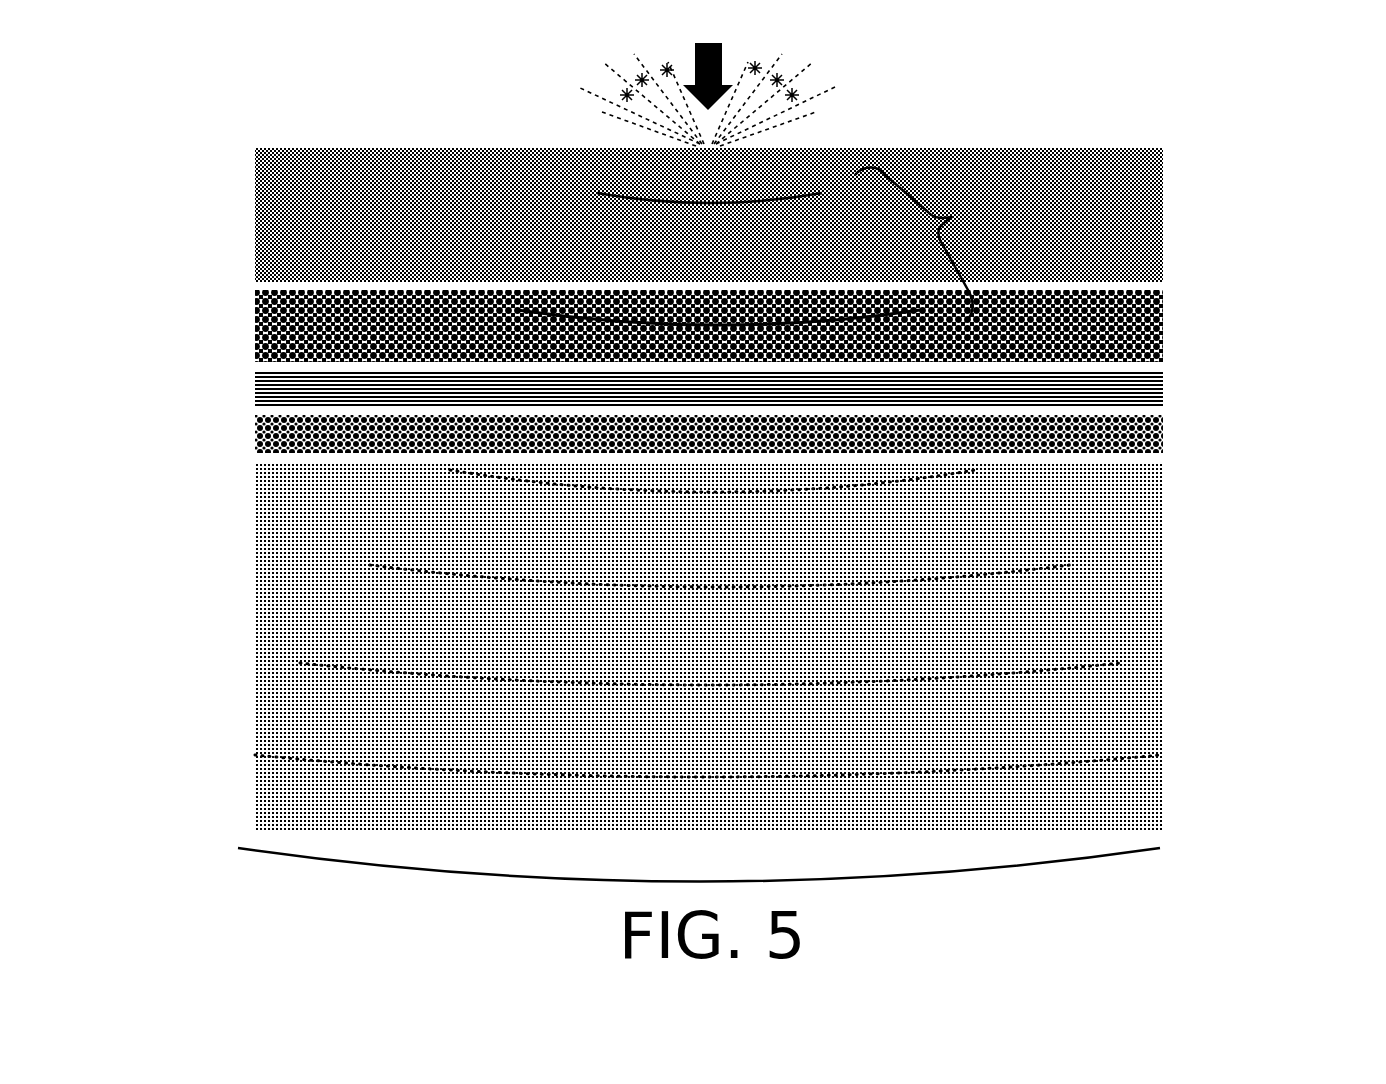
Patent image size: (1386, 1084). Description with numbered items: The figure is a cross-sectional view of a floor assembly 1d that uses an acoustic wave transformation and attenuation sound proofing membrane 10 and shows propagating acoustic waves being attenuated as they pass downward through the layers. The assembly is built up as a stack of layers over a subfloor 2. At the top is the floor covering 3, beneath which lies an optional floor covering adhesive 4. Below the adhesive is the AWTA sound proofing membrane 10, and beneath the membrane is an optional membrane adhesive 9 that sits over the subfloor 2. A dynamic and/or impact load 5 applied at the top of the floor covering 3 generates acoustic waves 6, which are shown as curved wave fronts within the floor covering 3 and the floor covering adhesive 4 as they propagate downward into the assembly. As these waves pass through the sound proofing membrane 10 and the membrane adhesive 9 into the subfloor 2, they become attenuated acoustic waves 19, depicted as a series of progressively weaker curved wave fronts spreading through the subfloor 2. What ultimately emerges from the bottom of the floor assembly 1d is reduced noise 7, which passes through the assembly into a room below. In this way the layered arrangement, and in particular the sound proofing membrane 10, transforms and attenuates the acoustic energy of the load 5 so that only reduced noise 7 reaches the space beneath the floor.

The floor assembly 1d is at (752, 490).
The subfloor 2 is at (253, 535).
The floor covering 3 is at (252, 222).
The floor covering adhesive 4 is at (252, 325).
The dynamic and/or impact load 5 is at (782, 128).
The acoustic waves 6 is at (770, 246).
The reduced noise 7 is at (215, 842).
The membrane adhesive 9 is at (252, 430).
The acoustic wave transformation and attenuation (AWTA) sound proofing membrane 10 is at (252, 383).
The attenuated acoustic waves 19 is at (1013, 452).